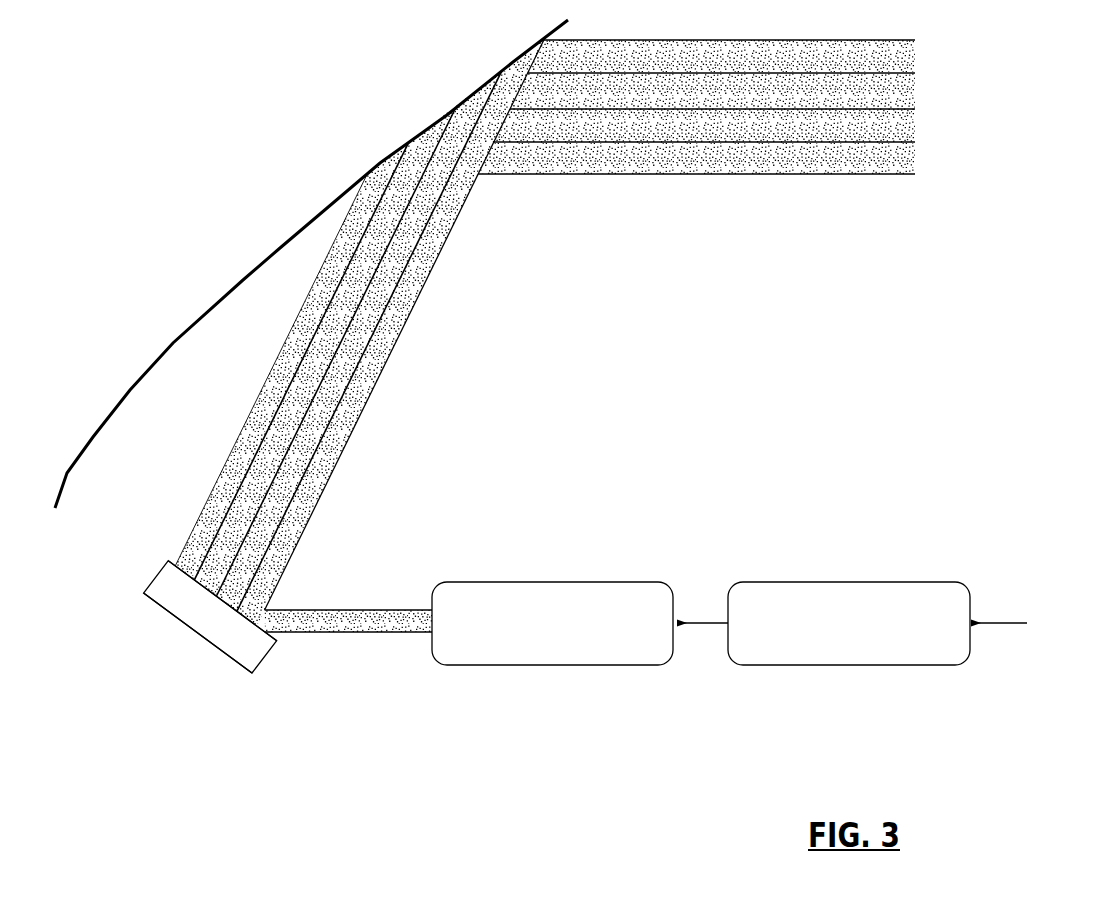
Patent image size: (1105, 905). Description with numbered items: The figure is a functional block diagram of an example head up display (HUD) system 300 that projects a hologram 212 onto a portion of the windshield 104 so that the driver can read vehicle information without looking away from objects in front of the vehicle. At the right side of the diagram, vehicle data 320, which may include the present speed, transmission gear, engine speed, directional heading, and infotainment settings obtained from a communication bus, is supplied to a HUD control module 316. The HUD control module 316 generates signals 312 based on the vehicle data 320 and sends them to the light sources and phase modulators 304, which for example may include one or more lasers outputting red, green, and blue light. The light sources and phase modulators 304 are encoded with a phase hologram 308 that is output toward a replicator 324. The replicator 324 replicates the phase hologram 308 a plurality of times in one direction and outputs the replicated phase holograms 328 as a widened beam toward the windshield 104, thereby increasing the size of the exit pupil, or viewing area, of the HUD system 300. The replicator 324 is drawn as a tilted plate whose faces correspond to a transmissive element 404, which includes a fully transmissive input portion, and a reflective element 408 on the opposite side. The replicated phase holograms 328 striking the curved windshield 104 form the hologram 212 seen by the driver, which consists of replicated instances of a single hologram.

The windshield 104 is at (173, 343).
The hologram 212 is at (936, 110).
The head up display (HUD) system 300 is at (986, 357).
The light sources and phase modulators 304 is at (548, 582).
The phase hologram 308 is at (344, 609).
The signals 312 is at (702, 623).
The HUD control module 316 is at (840, 582).
The vehicle data 320 is at (997, 623).
The replicator 324 is at (228, 633).
The replicated phase holograms 328 is at (393, 382).
The transmissive element 404 is at (170, 560).
The reflective element 408 is at (168, 611).